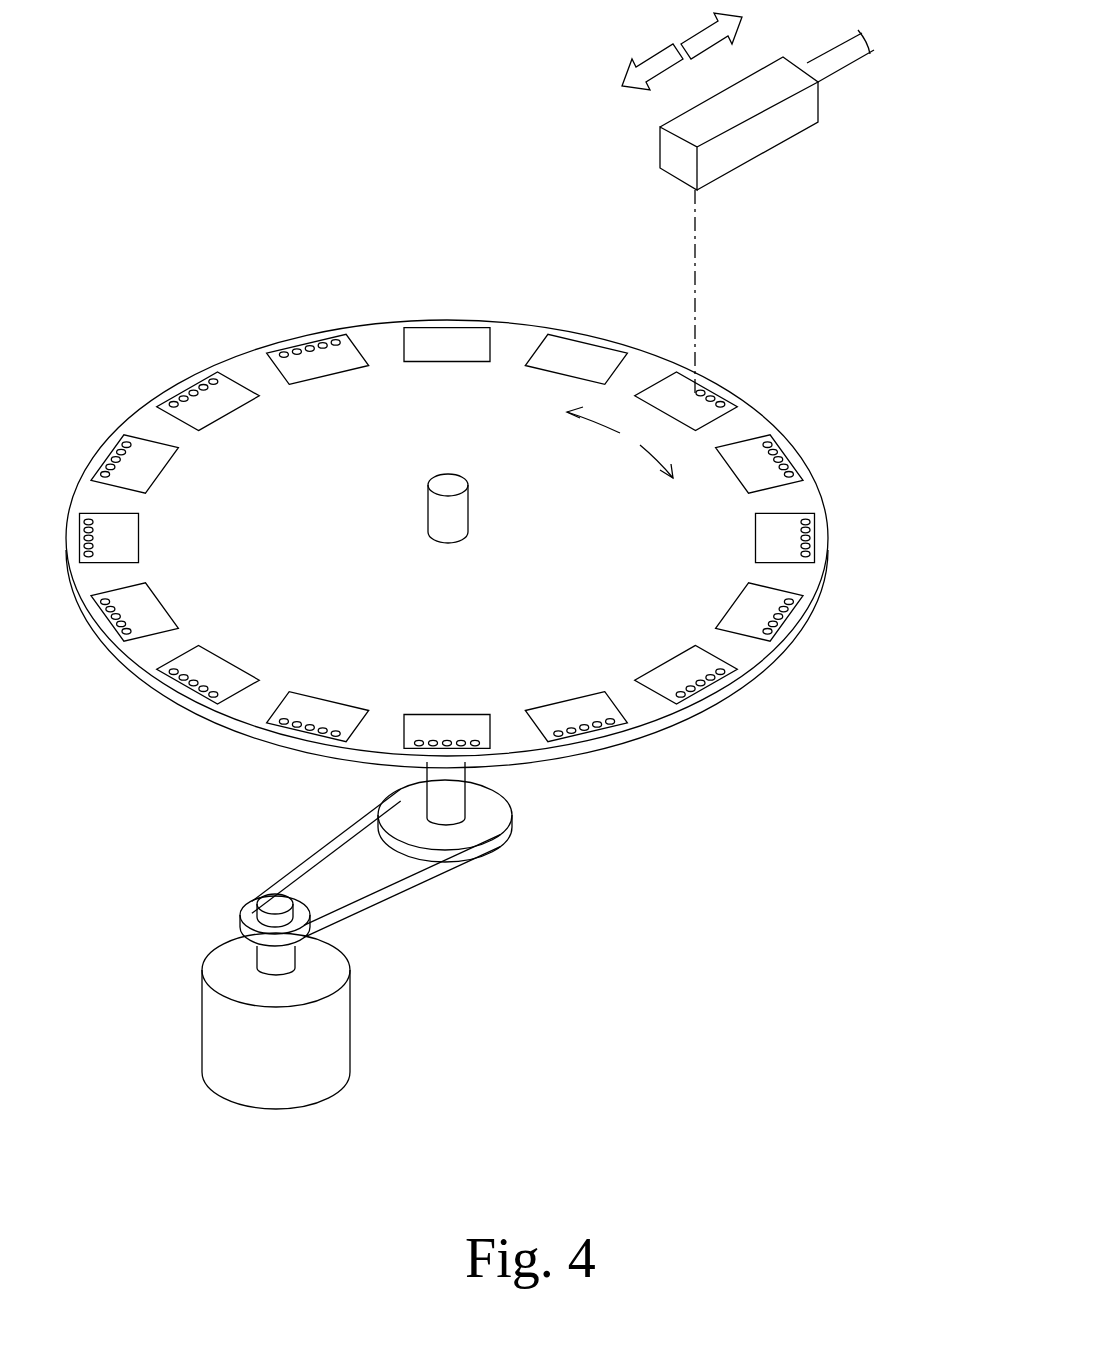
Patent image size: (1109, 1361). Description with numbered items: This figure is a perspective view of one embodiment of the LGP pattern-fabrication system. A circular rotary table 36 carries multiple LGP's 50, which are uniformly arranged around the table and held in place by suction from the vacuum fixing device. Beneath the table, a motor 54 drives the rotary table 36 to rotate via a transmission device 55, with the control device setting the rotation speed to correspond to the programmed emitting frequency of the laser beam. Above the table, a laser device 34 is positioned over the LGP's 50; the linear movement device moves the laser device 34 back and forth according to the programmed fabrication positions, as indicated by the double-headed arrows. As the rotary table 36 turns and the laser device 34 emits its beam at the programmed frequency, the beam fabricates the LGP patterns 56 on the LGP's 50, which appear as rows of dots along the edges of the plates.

The laser device 34 is at (748, 143).
The rotary table 36 is at (702, 705).
The LGP 50 is at (713, 392).
The motor 54 is at (300, 1065).
The transmission device 55 is at (548, 850).
The LGP patterns 56 is at (770, 460).